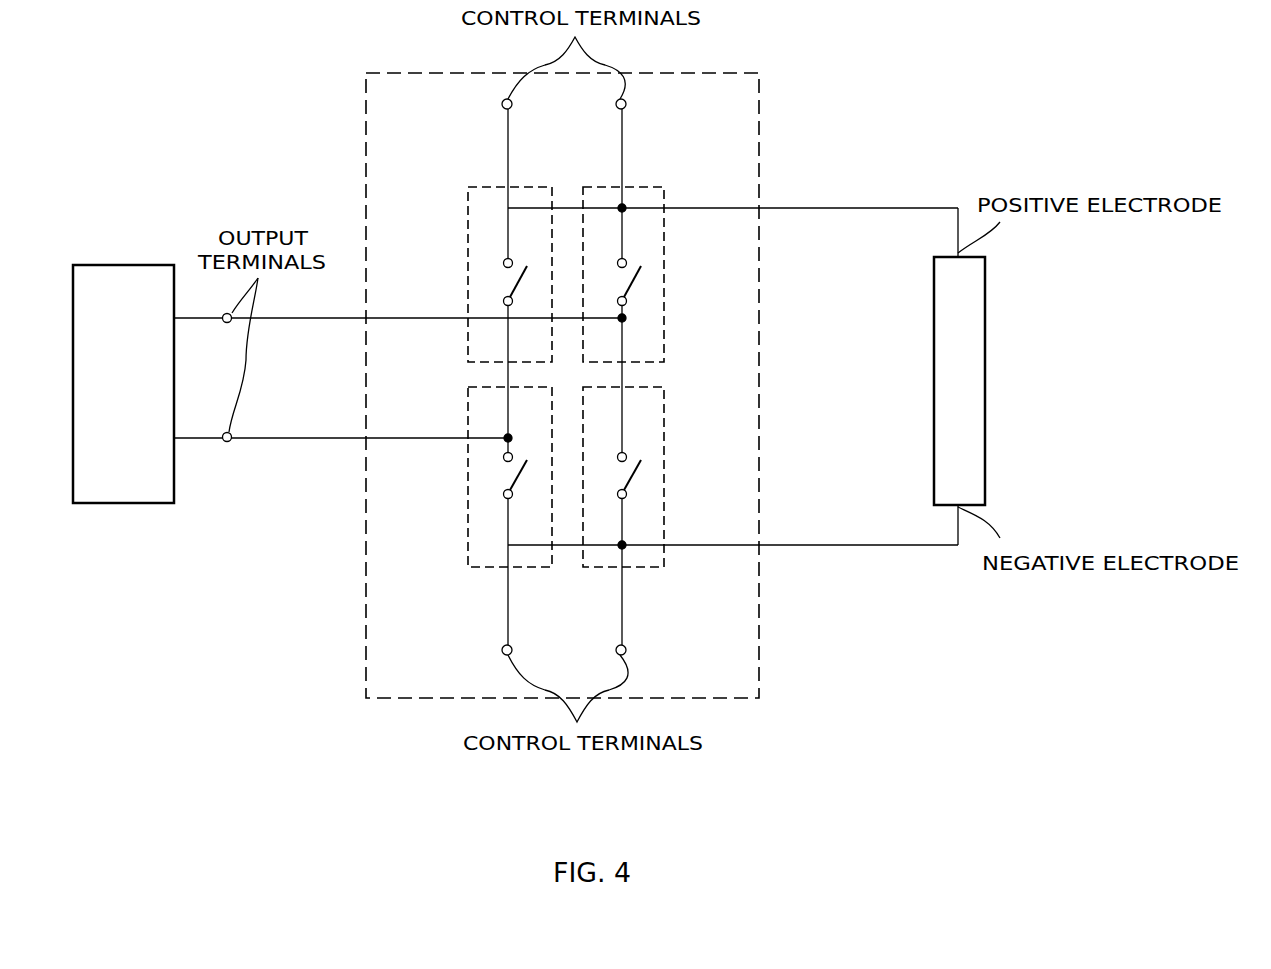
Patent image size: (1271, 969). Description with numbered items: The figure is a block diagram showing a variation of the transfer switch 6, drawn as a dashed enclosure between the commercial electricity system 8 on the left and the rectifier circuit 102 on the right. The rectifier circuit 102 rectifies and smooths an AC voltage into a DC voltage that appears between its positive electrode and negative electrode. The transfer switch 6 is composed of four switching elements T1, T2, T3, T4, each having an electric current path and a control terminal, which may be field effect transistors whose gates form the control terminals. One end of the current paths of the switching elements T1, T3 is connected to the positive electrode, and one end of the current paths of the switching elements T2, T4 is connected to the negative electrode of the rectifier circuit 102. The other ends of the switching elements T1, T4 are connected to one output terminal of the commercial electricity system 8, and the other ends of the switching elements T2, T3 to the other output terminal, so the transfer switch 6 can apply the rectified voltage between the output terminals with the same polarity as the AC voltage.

The transfer switch 6 is at (365, 100).
The commercial electricity system 8 is at (115, 264).
The rectifier circuit 102 is at (985, 445).
The switching element T1 is at (664, 268).
The switching element T2 is at (468, 480).
The switching element T3 is at (468, 260).
The switching element T4 is at (664, 480).